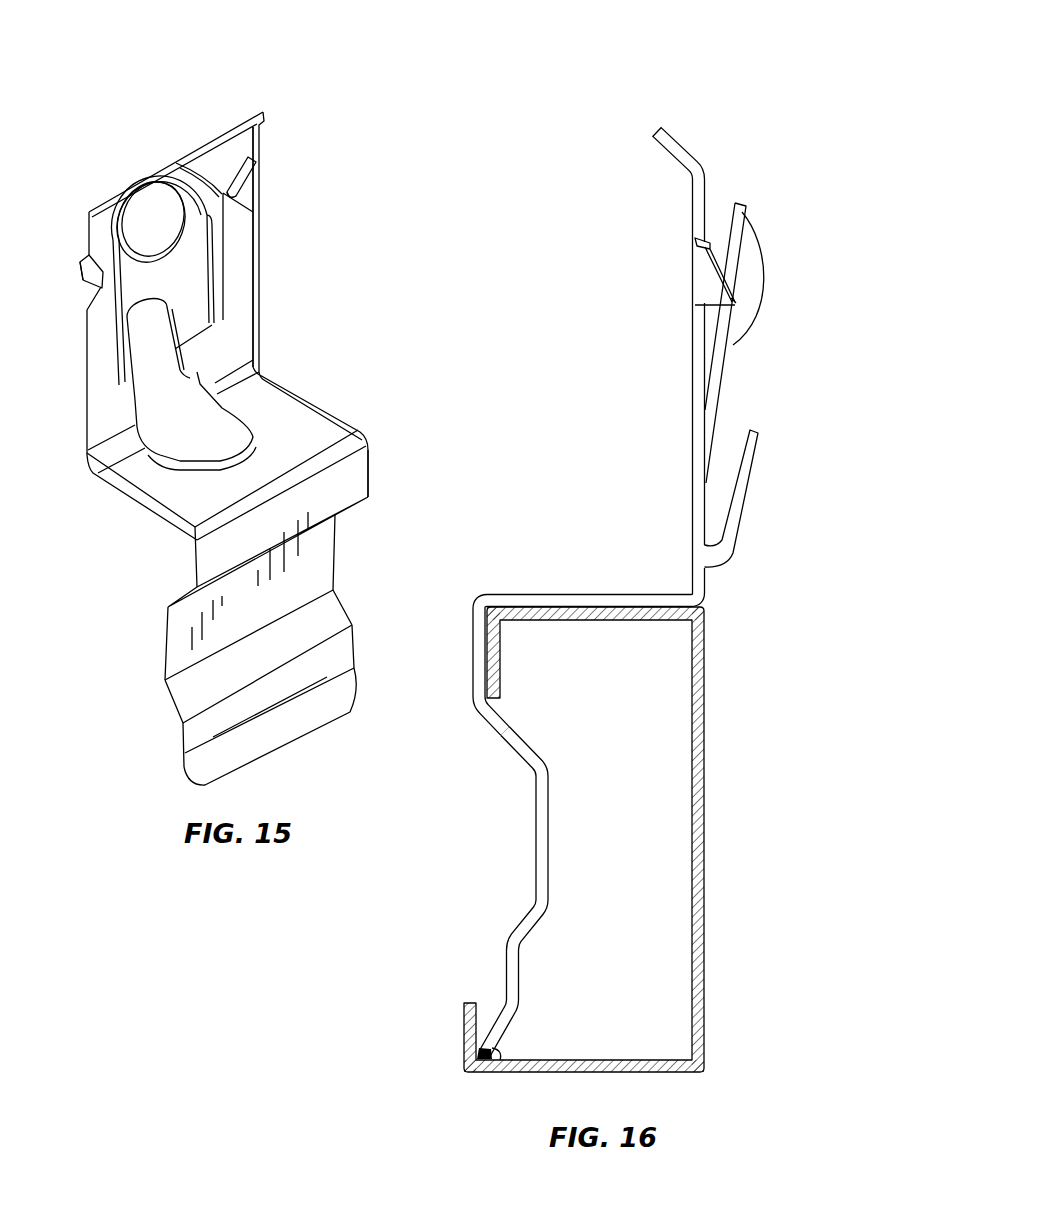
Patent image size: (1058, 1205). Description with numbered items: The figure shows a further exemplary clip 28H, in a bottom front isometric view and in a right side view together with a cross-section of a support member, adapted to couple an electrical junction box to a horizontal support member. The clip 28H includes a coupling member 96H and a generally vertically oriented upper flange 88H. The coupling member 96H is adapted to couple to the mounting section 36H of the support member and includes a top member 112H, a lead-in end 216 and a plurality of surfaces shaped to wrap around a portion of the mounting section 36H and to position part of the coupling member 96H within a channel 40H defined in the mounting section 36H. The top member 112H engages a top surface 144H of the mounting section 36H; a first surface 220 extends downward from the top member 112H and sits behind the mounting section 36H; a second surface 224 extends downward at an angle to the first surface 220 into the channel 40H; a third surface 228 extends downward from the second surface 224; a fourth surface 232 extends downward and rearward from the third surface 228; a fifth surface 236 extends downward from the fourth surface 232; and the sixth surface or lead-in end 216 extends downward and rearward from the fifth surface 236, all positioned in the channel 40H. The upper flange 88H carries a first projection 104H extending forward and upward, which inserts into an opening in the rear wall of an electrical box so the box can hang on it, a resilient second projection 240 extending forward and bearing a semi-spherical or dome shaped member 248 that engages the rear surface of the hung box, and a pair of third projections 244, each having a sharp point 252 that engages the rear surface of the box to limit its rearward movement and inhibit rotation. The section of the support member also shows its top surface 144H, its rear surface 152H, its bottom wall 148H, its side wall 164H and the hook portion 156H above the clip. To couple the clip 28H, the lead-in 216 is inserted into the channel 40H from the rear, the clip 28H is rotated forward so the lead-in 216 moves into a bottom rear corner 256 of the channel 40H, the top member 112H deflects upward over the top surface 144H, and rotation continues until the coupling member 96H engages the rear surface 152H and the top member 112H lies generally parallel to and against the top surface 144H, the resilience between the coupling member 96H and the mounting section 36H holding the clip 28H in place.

In FIG. 15, the clip 28H is at (243, 437).
In FIG. 16, the clip 28H is at (617, 623).
In FIG. 16, the mounting section 36H is at (581, 853).
In FIG. 16, the channel 40H is at (662, 910).
In FIG. 15, the upper flange 88H is at (186, 281).
In FIG. 16, the upper flange 88H is at (724, 348).
In FIG. 15, the coupling member 96H is at (310, 598).
In FIG. 16, the coupling member 96H is at (502, 884).
In FIG. 15, the first projection 104H is at (150, 338).
In FIG. 16, the first projection 104H is at (747, 477).
In FIG. 15, the top member 112H is at (290, 408).
In FIG. 16, the top member 112H is at (623, 595).
In FIG. 16, the top surface 144H is at (550, 588).
In FIG. 16, the bottom wall 148H is at (650, 1075).
In FIG. 16, the rear surface 152H is at (455, 1027).
In FIG. 15, the hook portion 156H is at (240, 262).
In FIG. 16, the hook portion 156H is at (707, 187).
In FIG. 16, the side wall 164H is at (706, 712).
In FIG. 15, the lead-in end 216 is at (332, 705).
In FIG. 16, the lead-in end 216 is at (503, 1036).
In FIG. 15, the first surface 220 is at (371, 452).
In FIG. 16, the first surface 220 is at (477, 663).
In FIG. 15, the second surface 224 is at (354, 512).
In FIG. 16, the second surface 224 is at (520, 731).
In FIG. 15, the third surface 228 is at (338, 547).
In FIG. 16, the third surface 228 is at (535, 840).
In FIG. 15, the fourth surface 232 is at (344, 606).
In FIG. 16, the fourth surface 232 is at (523, 920).
In FIG. 15, the fifth surface 236 is at (353, 648).
In FIG. 16, the fifth surface 236 is at (520, 977).
In FIG. 15, the second projection 240 is at (199, 266).
In FIG. 16, the second projection 240 is at (765, 343).
In FIG. 15, the third projections 244 is at (232, 170).
In FIG. 16, the third projections 244 is at (718, 262).
In FIG. 15, the dome shaped member 248 is at (140, 214).
In FIG. 16, the dome shaped member 248 is at (757, 283).
In FIG. 15, the sharp point 252 is at (88, 283).
In FIG. 16, the sharp point 252 is at (740, 303).
In FIG. 16, the bottom rear corner 256 is at (500, 1062).